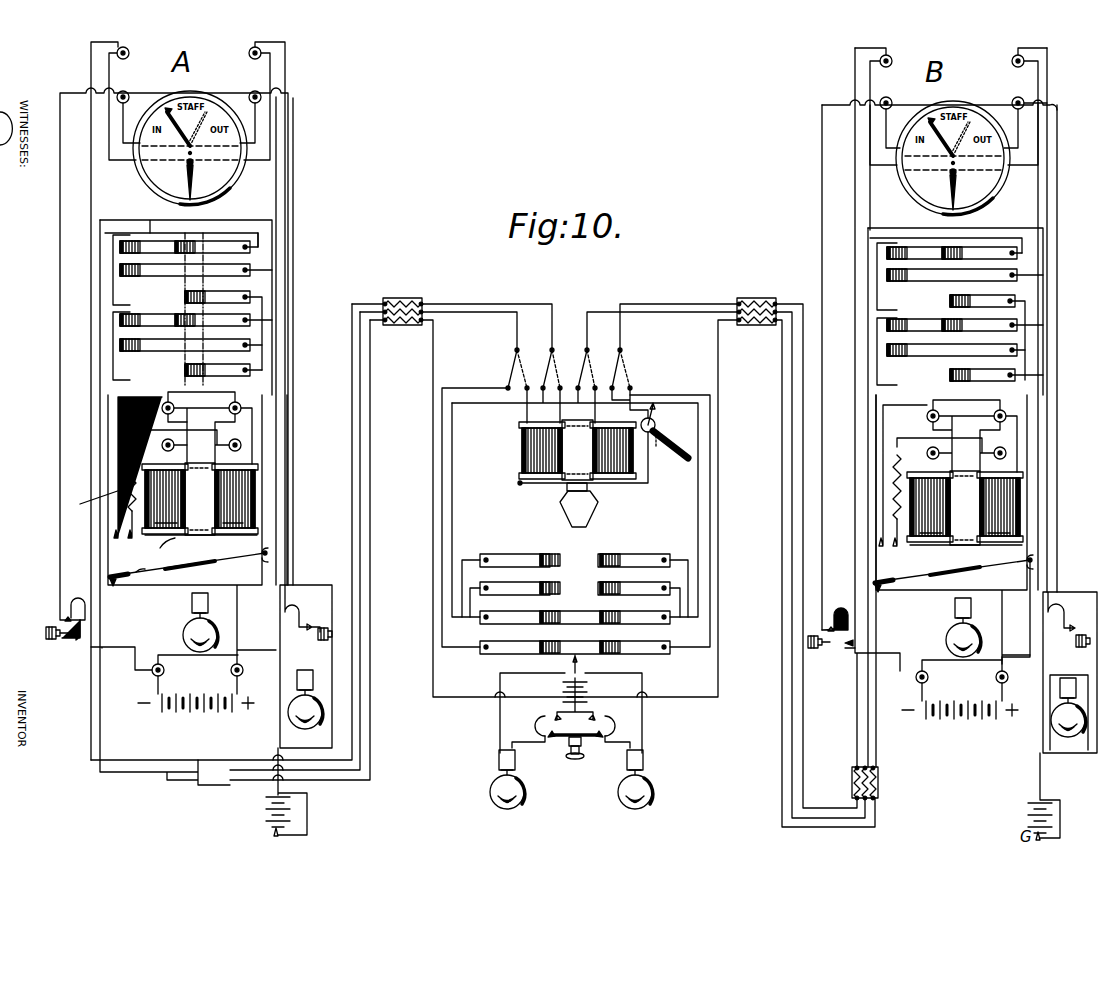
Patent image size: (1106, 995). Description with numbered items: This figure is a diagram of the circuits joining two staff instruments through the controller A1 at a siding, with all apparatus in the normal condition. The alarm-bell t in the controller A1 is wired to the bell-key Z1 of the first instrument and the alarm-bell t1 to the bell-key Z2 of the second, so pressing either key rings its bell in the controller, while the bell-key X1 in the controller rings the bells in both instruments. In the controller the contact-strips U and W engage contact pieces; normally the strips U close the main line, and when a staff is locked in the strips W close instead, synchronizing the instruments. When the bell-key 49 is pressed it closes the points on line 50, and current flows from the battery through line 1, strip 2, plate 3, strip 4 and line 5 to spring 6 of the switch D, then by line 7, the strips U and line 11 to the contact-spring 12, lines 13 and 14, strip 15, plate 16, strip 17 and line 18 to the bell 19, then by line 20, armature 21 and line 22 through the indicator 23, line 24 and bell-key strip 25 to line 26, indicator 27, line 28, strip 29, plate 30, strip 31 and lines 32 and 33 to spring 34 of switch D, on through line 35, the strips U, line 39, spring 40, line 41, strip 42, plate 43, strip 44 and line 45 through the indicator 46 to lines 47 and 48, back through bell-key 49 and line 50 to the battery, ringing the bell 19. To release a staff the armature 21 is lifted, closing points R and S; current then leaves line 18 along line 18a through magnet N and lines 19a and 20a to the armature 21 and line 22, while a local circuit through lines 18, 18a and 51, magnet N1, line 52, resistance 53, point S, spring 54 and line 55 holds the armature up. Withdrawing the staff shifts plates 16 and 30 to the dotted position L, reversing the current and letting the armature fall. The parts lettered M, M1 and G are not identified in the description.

The line 1 is at (999, 528).
The strip 2 is at (956, 347).
The plate 3 is at (890, 362).
The strip 4 is at (965, 322).
The line 5 is at (1062, 285).
The spring of switch 6 is at (618, 369).
The line 7 is at (662, 396).
The line 11 is at (473, 517).
The contact-spring 12 is at (510, 369).
The line 13 is at (487, 323).
The line 14 is at (378, 448).
The strip 15 is at (196, 321).
The plate 16 is at (191, 355).
The strip 17 is at (213, 364).
The line 18 is at (280, 420).
The line 18a is at (293, 543).
The bell 19 is at (193, 622).
The line 19a is at (238, 419).
The line 20 is at (187, 572).
The line 20a is at (88, 480).
The armature 21 is at (190, 572).
The line 22 is at (293, 182).
The indicator 23 is at (192, 132).
The line 24 is at (60, 135).
The bell-key strip 25 is at (65, 613).
The line 26 is at (91, 74).
The indicator 27 is at (201, 179).
The line 28 is at (286, 137).
The strip 29 is at (223, 320).
The plate 30 is at (196, 279).
The strip 31 is at (189, 251).
The line 32 is at (186, 298).
The line 33 is at (99, 292).
The spring of switch D 34 is at (544, 369).
The line 35 is at (575, 502).
The line 39 is at (708, 535).
The spring of switch D 40 is at (590, 369).
The line 41 is at (855, 485).
The strip 42 is at (955, 311).
The plate 43 is at (890, 290).
The strip 44 is at (965, 271).
The line 45 is at (1040, 140).
The indicator 46 is at (967, 187).
The line 47 is at (870, 146).
The line 48 is at (932, 529).
The bell-key 49 is at (828, 617).
The line 50 is at (941, 640).
The line 51 is at (144, 491).
The line 52 is at (183, 439).
The resistance 53 is at (96, 499).
The spring 54 is at (146, 563).
The line 55 is at (210, 606).
The dotted-line position L is at (158, 309).
The magnet N is at (240, 493).
The magnet N1 is at (168, 545).
The point R is at (115, 551).
The point S is at (133, 551).
The switch D is at (564, 364).
The electromagnet M is at (542, 450).
The electromagnet M1 is at (613, 450).
The controller A1 is at (582, 473).
The contact-strips W is at (575, 585).
The contact-strips U is at (575, 633).
The bell-key X1 is at (571, 717).
The alarm-bell t is at (507, 791).
The alarm-bell t1 is at (635, 791).
The bell-key Z1 is at (306, 666).
The bell-key Z2 is at (1070, 672).
The battery / ground G is at (282, 792).